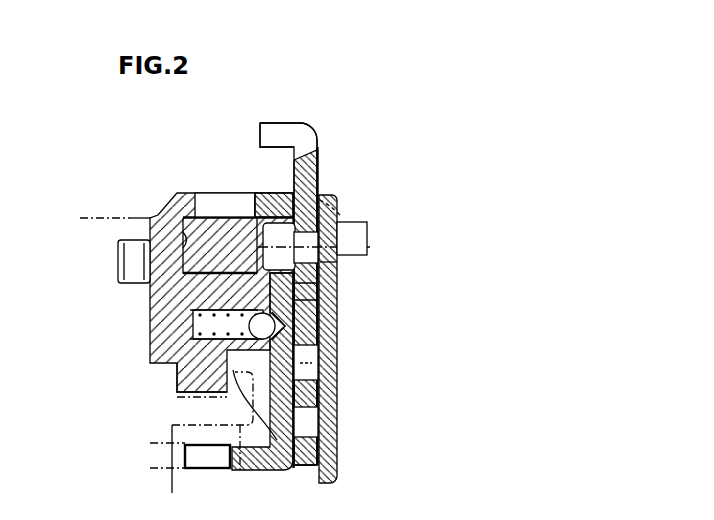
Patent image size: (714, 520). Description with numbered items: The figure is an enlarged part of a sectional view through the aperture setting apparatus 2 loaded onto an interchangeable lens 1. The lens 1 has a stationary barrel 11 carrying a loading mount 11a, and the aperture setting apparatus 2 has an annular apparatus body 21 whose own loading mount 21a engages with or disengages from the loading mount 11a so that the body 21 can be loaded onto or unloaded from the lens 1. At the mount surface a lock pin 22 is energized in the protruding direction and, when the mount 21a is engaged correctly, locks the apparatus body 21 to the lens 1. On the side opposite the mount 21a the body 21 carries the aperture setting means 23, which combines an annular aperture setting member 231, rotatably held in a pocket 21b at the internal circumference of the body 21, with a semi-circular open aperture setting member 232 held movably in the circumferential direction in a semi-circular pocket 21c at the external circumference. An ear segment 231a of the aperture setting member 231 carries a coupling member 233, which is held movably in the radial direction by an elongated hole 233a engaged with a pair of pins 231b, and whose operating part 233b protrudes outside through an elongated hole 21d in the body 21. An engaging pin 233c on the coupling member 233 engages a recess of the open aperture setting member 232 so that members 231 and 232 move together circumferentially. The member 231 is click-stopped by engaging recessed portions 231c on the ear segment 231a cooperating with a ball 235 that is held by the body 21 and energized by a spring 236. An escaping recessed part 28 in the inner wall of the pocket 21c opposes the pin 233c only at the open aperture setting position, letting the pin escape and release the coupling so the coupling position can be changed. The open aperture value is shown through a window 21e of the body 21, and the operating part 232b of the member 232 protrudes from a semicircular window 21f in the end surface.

The interchangeable lens 1 is at (67, 213).
The stationary barrel 11 is at (101, 215).
The loading mount 11a is at (237, 470).
The aperture setting apparatus 2 is at (171, 190).
The apparatus body 21 is at (197, 192).
The loading mount 21a is at (182, 377).
The pocket 21b is at (290, 288).
The semi-circular pocket 21c is at (185, 240).
The elongated hole 21d is at (312, 192).
The window 21e is at (222, 205).
The semicircular window 21f is at (345, 212).
The lock pin 22 is at (130, 264).
The aperture setting means 23 is at (75, 368).
The aperture setting member 231 is at (150, 362).
The ear segment 231a is at (300, 378).
The pins 231b is at (305, 412).
The engaging recessed portions 231c is at (295, 350).
The open aperture setting member 232 is at (220, 275).
The operating part 232b is at (358, 236).
The coupling member 233 is at (250, 303).
The elongated hole 233a is at (266, 200).
The operating part 233b is at (290, 128).
The engaging pin 233c is at (330, 263).
The ball 235 is at (290, 345).
The spring 236 is at (300, 297).
The escaping recessed part 28 is at (305, 278).